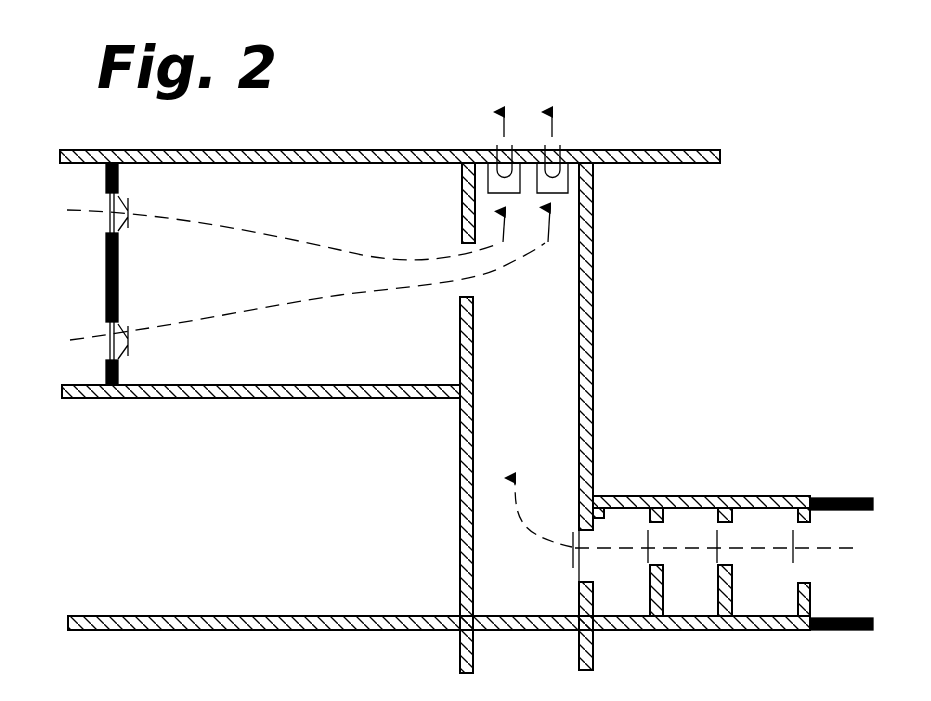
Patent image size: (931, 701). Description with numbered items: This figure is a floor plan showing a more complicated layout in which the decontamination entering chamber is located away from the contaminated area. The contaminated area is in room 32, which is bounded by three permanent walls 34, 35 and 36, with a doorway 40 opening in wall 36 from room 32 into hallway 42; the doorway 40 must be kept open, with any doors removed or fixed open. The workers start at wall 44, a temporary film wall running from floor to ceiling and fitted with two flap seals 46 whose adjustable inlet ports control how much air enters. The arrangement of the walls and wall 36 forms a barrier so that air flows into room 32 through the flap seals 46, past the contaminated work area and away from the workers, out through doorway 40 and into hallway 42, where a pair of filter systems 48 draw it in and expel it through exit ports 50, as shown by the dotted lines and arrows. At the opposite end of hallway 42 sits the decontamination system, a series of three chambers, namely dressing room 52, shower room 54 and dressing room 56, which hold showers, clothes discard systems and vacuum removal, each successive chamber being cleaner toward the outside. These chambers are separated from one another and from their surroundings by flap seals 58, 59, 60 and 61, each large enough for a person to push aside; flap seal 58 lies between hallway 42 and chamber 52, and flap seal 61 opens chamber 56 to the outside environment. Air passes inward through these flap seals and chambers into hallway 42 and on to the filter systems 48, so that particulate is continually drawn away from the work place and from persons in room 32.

The room 32 is at (258, 357).
The permanent wall 34 is at (332, 398).
The permanent wall 35 is at (305, 151).
The permanent wall 36 is at (460, 358).
The doorway 40 is at (465, 295).
The hallway 42 is at (552, 342).
The temporary film wall 44 is at (107, 277).
The flap seals 46 is at (128, 205).
The filter systems 48 is at (512, 185).
The exit ports 50 is at (497, 150).
The dressing room 52 is at (630, 522).
The shower room 54 is at (692, 522).
The dressing room 56 is at (768, 522).
The flap seal 58 is at (573, 560).
The flap seal 59 is at (645, 553).
The flap seal 60 is at (716, 555).
The flap seal 61 is at (790, 557).